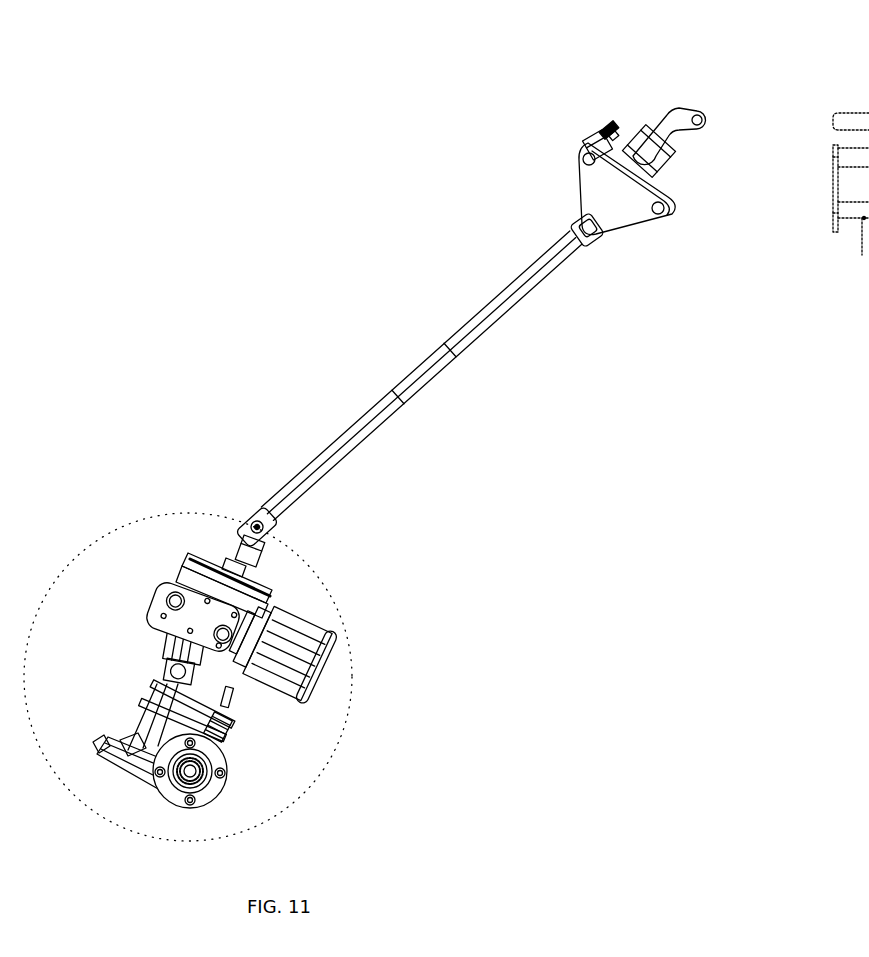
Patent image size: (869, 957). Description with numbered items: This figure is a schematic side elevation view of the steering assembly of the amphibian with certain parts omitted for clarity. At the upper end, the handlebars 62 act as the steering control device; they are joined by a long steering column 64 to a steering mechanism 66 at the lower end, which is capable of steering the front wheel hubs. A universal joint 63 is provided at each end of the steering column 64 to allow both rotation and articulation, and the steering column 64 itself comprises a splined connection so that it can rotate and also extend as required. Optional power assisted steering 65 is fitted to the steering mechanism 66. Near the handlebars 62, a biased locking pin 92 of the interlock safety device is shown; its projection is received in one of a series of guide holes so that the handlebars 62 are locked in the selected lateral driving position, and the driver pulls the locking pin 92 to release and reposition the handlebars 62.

The handlebars 62 is at (678, 118).
The biased locking pin 92 is at (602, 138).
The steering column 64 is at (468, 337).
The universal joint 63 is at (283, 521).
The power assisted steering 65 is at (323, 627).
The steering mechanism 66 is at (238, 677).